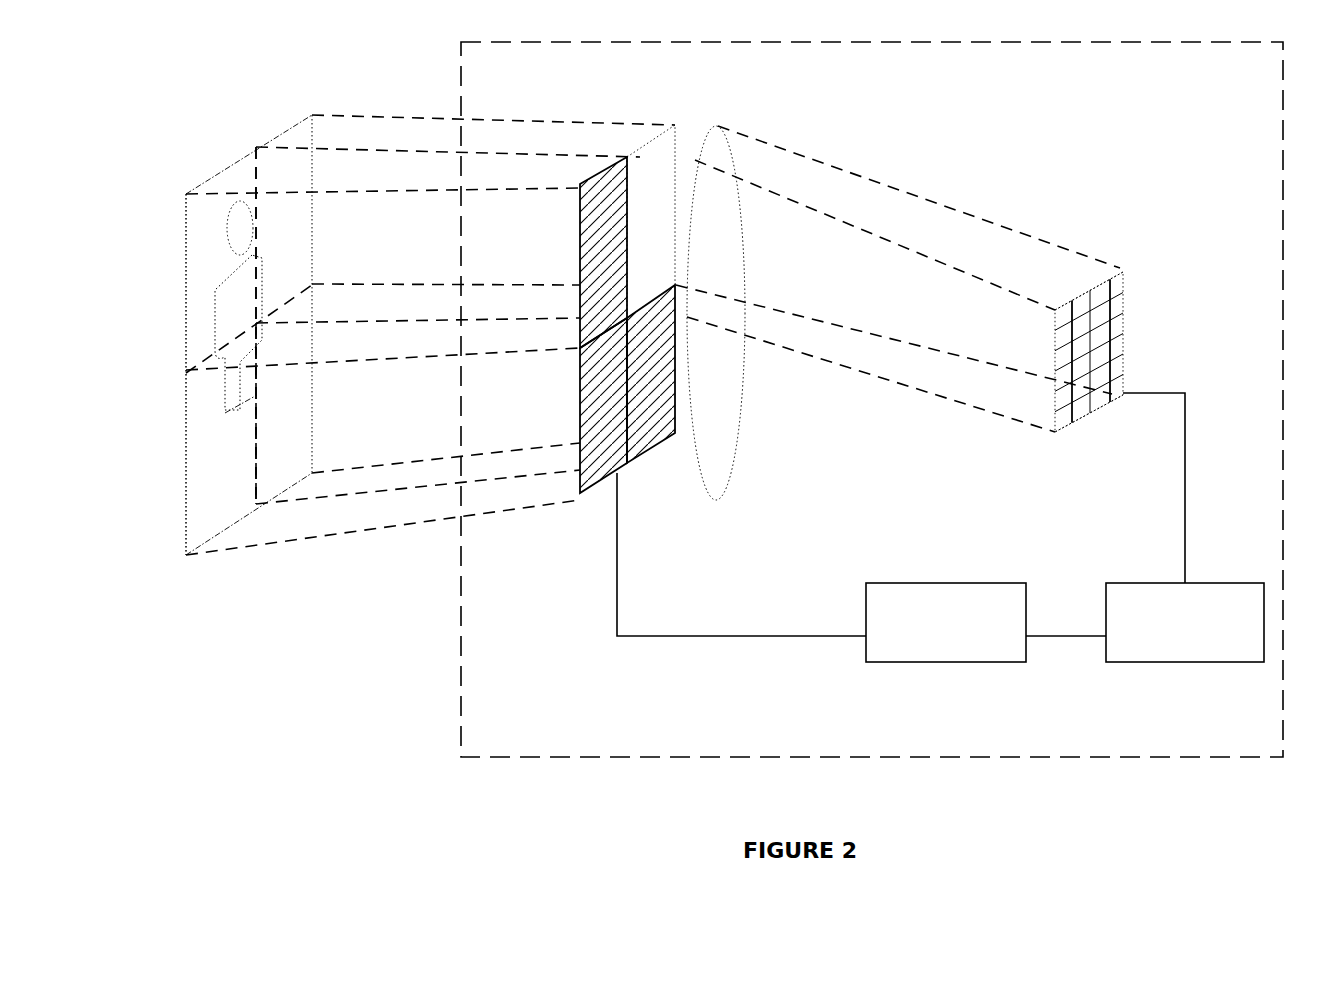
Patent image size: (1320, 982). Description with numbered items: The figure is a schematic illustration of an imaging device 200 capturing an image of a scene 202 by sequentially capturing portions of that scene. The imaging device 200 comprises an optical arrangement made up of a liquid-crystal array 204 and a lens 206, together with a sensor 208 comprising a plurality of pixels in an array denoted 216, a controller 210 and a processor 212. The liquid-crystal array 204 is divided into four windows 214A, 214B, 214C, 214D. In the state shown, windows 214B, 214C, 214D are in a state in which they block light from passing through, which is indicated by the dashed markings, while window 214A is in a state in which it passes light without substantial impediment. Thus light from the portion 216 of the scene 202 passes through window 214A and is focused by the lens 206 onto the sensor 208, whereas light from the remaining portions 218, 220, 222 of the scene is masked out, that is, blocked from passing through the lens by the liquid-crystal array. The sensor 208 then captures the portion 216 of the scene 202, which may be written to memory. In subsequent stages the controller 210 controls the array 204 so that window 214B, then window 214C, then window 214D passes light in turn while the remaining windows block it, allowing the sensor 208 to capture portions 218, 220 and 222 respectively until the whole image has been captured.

The imaging device 200 is at (483, 758).
The scene 202 is at (253, 122).
The liquid-crystal array 204 is at (645, 320).
The lens 206 is at (717, 125).
The sensor 208 is at (1122, 273).
The controller 210 is at (893, 663).
The processor 212 is at (1172, 663).
The window 214A is at (674, 125).
The window 214B is at (603, 173).
The window 214C is at (597, 485).
The window 214D is at (645, 455).
The portion of the scene 216 is at (282, 238).
The portion of the scene 218 is at (215, 243).
The portion of the scene 220 is at (203, 475).
The portion of the scene 222 is at (282, 435).